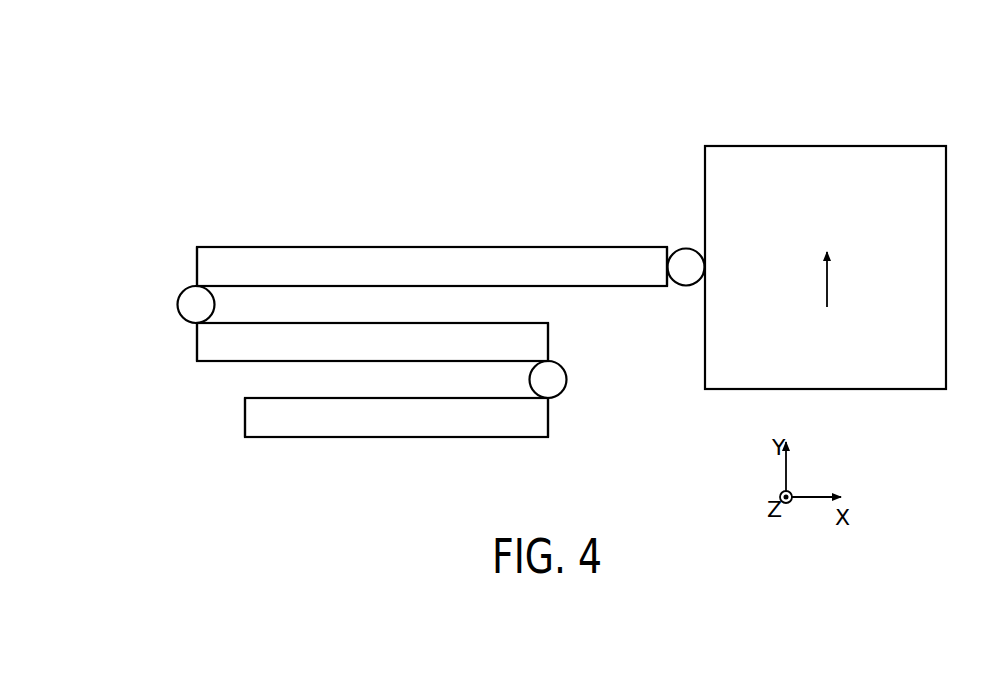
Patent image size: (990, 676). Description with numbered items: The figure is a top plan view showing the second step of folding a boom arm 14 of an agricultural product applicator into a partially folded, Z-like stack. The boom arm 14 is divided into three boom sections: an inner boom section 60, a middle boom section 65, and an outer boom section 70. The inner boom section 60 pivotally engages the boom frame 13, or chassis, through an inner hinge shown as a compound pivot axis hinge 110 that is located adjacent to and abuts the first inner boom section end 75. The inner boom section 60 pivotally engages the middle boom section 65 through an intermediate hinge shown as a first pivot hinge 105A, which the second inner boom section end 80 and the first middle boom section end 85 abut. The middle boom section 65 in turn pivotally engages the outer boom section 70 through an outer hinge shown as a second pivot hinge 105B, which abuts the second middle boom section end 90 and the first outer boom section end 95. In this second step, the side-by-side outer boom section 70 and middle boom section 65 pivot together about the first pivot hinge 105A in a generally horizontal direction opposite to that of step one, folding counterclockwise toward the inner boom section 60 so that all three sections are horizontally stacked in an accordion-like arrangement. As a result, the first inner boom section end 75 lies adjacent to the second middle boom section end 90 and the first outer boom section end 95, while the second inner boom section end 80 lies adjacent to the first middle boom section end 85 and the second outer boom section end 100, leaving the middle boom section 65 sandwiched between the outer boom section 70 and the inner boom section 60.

The boom frame 13 is at (825, 146).
The boom arm 14 is at (785, 72).
The inner boom section 60 is at (432, 266).
The middle boom section 65 is at (372, 342).
The outer boom section 70 is at (396, 417).
The first inner boom section end 75 is at (658, 247).
The second inner boom section end 80 is at (197, 268).
The first middle boom section end 85 is at (197, 343).
The second middle boom section end 90 is at (548, 341).
The first outer boom section end 95 is at (548, 414).
The second outer boom section end 100 is at (245, 418).
The first pivot hinge 105A is at (180, 308).
The second pivot hinge 105B is at (565, 380).
The compound pivot axis hinge 110 is at (676, 253).